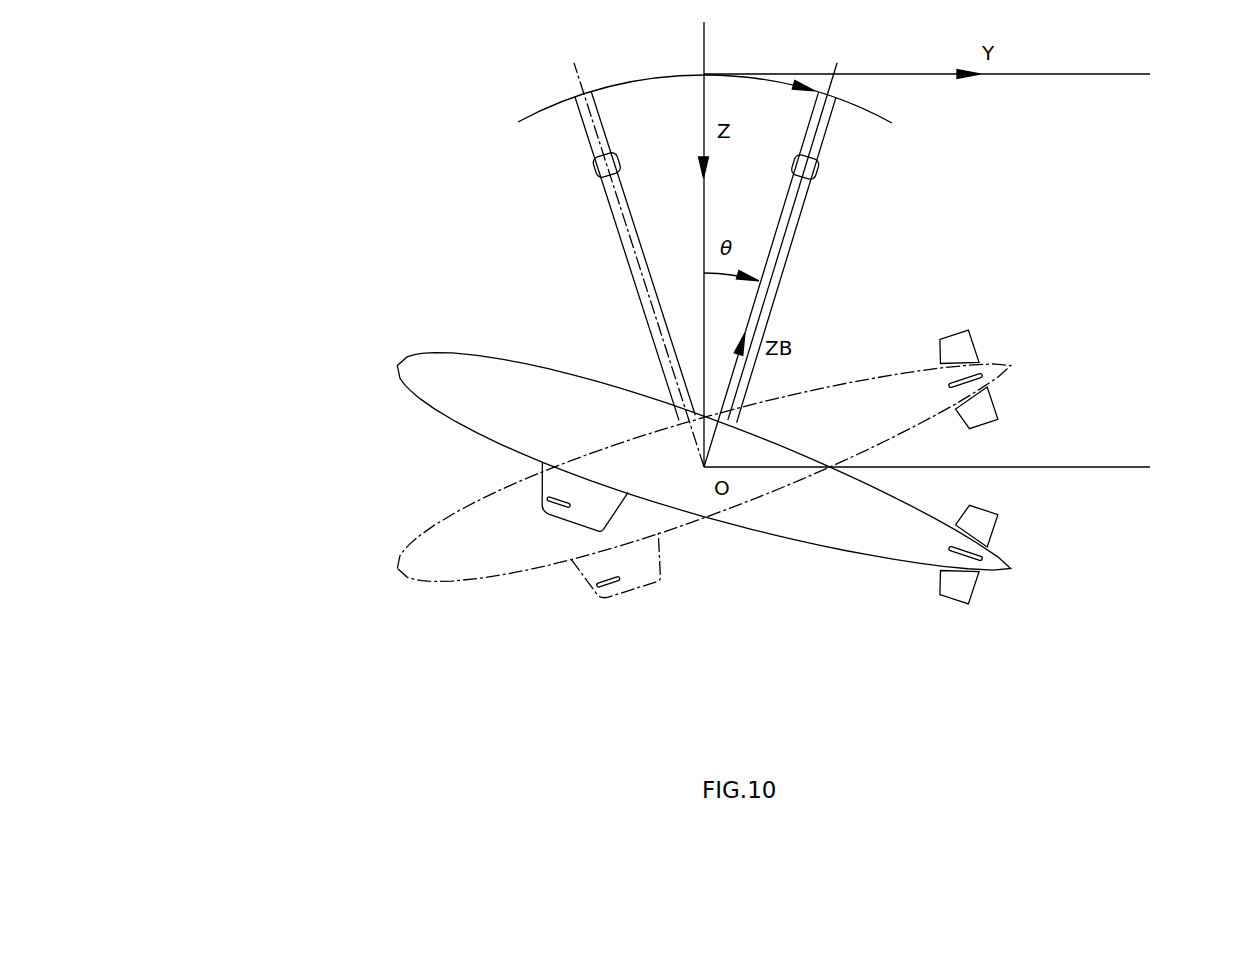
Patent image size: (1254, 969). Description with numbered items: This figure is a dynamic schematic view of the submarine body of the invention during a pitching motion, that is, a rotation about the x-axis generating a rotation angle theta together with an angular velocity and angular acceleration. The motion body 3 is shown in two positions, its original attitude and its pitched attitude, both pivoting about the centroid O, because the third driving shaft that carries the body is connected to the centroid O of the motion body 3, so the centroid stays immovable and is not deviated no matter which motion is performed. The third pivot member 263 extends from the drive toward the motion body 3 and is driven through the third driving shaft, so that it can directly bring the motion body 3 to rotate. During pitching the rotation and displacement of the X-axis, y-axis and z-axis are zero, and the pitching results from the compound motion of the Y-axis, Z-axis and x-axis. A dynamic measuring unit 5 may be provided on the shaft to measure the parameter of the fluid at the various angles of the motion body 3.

The motion body 3 is at (430, 363).
The third pivot member 263 is at (821, 133).
The dynamic measuring unit 5 is at (807, 172).